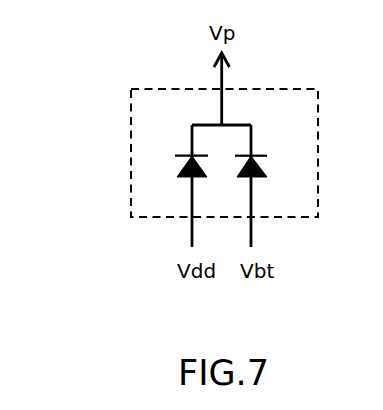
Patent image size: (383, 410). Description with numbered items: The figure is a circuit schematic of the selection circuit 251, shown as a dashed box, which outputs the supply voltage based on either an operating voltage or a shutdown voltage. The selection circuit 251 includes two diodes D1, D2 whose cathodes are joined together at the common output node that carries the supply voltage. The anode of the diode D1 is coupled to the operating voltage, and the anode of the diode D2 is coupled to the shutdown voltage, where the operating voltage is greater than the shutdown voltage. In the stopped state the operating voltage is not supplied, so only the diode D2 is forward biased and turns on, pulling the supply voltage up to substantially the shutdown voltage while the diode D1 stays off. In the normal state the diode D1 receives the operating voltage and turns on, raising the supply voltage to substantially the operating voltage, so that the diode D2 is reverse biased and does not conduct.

The selection circuit 251 is at (131, 112).
The diode D1 is at (175, 186).
The diode D2 is at (269, 186).